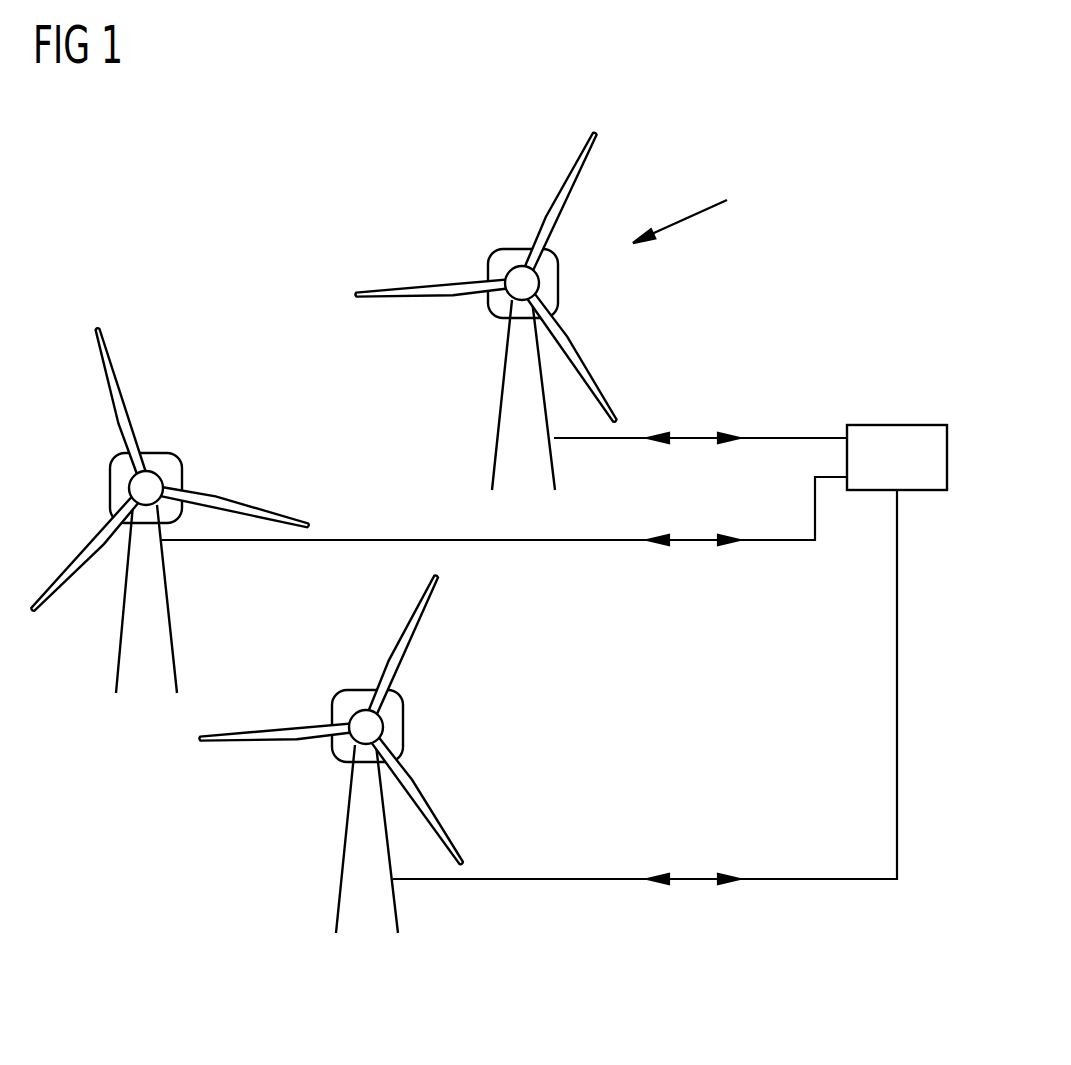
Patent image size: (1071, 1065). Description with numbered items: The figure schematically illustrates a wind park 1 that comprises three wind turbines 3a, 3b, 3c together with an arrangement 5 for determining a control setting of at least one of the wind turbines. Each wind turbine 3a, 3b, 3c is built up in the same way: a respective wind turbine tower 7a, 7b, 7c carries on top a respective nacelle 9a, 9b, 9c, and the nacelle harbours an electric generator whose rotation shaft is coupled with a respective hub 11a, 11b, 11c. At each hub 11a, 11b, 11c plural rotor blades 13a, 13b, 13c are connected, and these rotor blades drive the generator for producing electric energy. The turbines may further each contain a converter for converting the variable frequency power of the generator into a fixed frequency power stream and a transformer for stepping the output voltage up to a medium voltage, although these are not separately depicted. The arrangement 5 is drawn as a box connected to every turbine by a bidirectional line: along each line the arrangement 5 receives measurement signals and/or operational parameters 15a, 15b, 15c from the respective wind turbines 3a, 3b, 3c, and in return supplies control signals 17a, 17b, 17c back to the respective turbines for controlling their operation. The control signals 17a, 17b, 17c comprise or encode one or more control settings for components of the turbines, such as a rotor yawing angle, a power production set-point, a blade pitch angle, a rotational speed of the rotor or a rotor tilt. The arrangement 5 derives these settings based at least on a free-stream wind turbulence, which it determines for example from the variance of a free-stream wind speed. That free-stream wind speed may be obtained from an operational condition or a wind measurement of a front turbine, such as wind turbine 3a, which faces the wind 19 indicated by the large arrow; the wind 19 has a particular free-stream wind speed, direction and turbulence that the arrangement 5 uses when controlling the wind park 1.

The wind park 1 is at (190, 223).
The wind turbine 3a is at (470, 210).
The wind turbine 3b is at (230, 397).
The wind turbine 3c is at (458, 670).
The arrangement 5 is at (893, 424).
The wind turbine tower 7a is at (496, 446).
The wind turbine tower 7b is at (120, 650).
The wind turbine tower 7c is at (340, 886).
The nacelle 9a is at (520, 248).
The nacelle 9b is at (158, 452).
The nacelle 9c is at (366, 689).
The hub 11a is at (535, 284).
The hub 11b is at (135, 488).
The hub 11c is at (379, 727).
The rotor blades 13a is at (417, 285).
The rotor blades 13b is at (233, 504).
The rotor blades 13c is at (262, 726).
The measurement signals and/or operational parameters 15a is at (742, 437).
The measurement signals and/or operational parameters 15b is at (742, 539).
The measurement signals and/or operational parameters 15c is at (742, 878).
The control signals 17a is at (648, 437).
The control signals 17b is at (648, 539).
The control signals 17c is at (648, 878).
The wind 19 is at (684, 220).